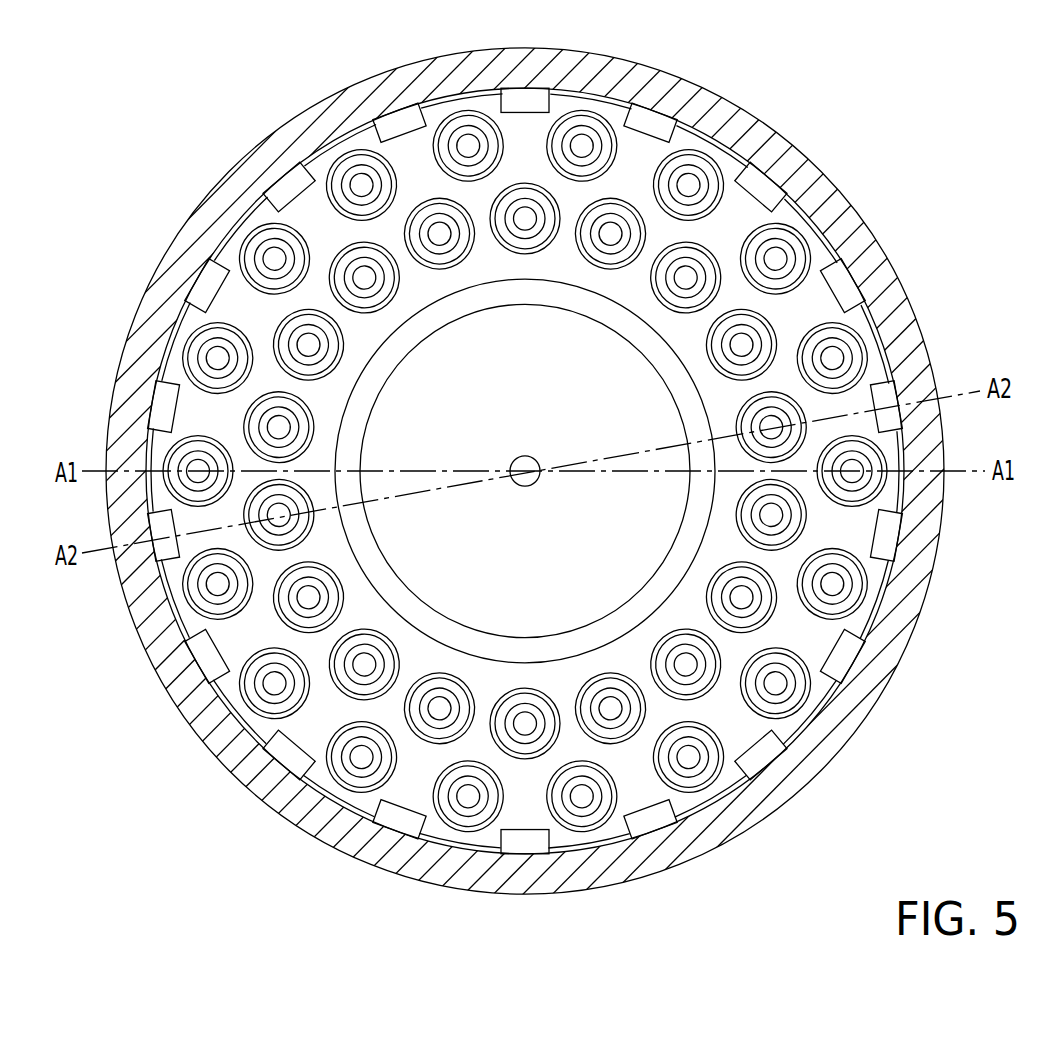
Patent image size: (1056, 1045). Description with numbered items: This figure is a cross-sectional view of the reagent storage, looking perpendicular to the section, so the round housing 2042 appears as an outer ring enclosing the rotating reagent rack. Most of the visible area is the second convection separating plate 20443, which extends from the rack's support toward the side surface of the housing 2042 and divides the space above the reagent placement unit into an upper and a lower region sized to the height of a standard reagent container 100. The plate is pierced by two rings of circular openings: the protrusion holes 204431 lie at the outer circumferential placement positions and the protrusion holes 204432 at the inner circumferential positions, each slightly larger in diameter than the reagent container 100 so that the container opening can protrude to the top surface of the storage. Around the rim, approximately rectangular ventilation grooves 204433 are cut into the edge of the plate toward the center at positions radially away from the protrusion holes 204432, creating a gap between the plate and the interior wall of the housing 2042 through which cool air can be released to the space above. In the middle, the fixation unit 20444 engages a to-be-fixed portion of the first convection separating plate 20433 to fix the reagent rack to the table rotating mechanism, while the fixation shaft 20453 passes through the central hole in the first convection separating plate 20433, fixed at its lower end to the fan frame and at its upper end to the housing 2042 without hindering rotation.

The housing 2042 is at (683, 95).
The reagent container 100 is at (698, 167).
The second convection separating plate 20443 is at (840, 192).
The fixation unit 20444 is at (645, 330).
The protrusion hole 204431 is at (862, 326).
The protrusion hole 204432 is at (807, 515).
The ventilation groove 204433 is at (843, 655).
The first convection separating plate 20433 is at (550, 325).
The fixation shaft 20453 is at (533, 483).